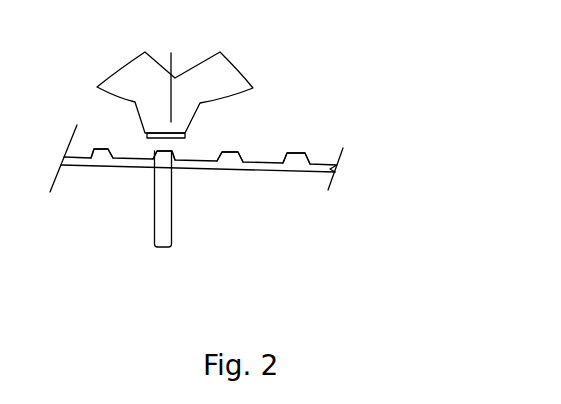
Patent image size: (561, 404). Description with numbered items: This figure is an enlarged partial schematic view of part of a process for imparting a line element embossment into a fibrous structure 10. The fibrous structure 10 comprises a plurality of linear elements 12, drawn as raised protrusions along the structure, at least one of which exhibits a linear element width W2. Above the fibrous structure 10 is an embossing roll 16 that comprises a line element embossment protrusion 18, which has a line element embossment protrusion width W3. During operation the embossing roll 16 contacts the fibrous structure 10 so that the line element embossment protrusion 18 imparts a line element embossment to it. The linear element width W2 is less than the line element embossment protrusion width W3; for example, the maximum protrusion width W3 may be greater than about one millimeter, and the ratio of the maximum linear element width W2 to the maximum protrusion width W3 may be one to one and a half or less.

The fibrous structure 10 is at (318, 165).
The linear element 12 is at (158, 152).
The embossing roll 16 is at (222, 94).
The line element embossment protrusion 18 is at (175, 76).
The linear element width W2 is at (160, 250).
The line element embossment protrusion width W3 is at (177, 137).